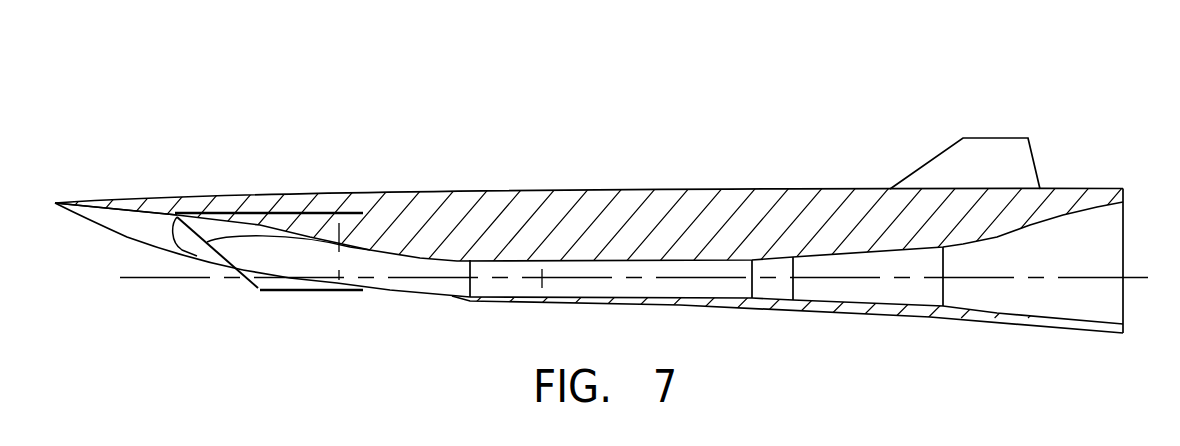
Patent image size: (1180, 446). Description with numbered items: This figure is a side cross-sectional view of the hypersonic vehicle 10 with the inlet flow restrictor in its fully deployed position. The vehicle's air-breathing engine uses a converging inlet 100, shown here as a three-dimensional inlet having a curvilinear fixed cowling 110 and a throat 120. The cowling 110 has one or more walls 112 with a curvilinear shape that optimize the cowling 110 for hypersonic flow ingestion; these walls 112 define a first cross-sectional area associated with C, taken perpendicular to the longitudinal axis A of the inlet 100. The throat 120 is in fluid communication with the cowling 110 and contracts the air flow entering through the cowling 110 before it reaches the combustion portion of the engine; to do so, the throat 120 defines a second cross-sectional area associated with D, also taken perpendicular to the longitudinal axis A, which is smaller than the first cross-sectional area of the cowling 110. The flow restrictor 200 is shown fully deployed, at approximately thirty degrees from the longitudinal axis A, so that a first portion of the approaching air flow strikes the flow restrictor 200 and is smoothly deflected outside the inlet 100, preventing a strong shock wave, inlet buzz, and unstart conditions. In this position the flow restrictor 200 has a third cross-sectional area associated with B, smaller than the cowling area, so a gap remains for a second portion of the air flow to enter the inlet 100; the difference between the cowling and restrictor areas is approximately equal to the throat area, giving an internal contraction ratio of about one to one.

The hypersonic vehicle 10 is at (408, 121).
The cowling 110 is at (111, 214).
The walls 112 is at (135, 210).
The flow restrictor 200 is at (198, 248).
The converging inlet 100 is at (315, 260).
The throat 120 is at (470, 285).
The longitudinal axis A is at (167, 278).
The third cross-sectional area B is at (278, 223).
The first cross-sectional area C is at (339, 251).
The second cross-sectional area D is at (543, 297).